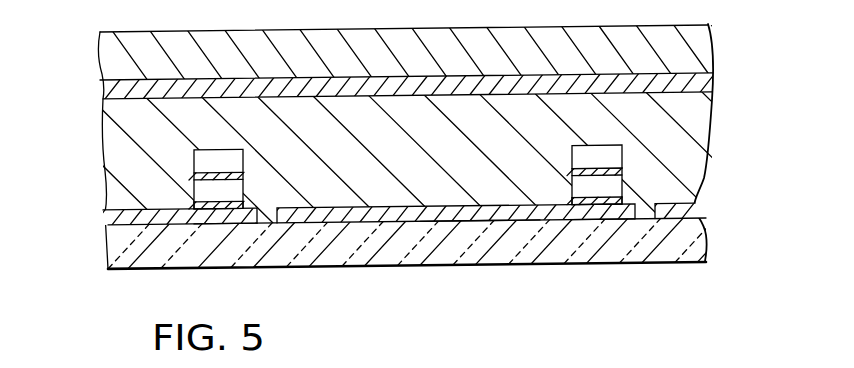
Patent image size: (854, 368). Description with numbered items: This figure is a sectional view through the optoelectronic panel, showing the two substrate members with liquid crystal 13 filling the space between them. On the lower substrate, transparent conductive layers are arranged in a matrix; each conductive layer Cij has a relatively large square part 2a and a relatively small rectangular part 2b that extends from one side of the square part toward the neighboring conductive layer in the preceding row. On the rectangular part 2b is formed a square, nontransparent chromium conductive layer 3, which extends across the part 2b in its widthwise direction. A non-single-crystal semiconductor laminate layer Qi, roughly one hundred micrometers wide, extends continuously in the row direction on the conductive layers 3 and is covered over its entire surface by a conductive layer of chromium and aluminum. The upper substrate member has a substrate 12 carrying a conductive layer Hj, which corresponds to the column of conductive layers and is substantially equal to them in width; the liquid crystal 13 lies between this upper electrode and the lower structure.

The substrate 12 is at (712, 58).
The conductive layer Hj is at (712, 84).
The liquid crystal 13 is at (699, 163).
The non-single-crystal semiconductor laminate layer Qi is at (210, 192).
The conductive layer 3 is at (586, 205).
The rectangular part 2b is at (617, 219).
The square part 2a is at (459, 220).
The conductive layer Cij is at (385, 212).